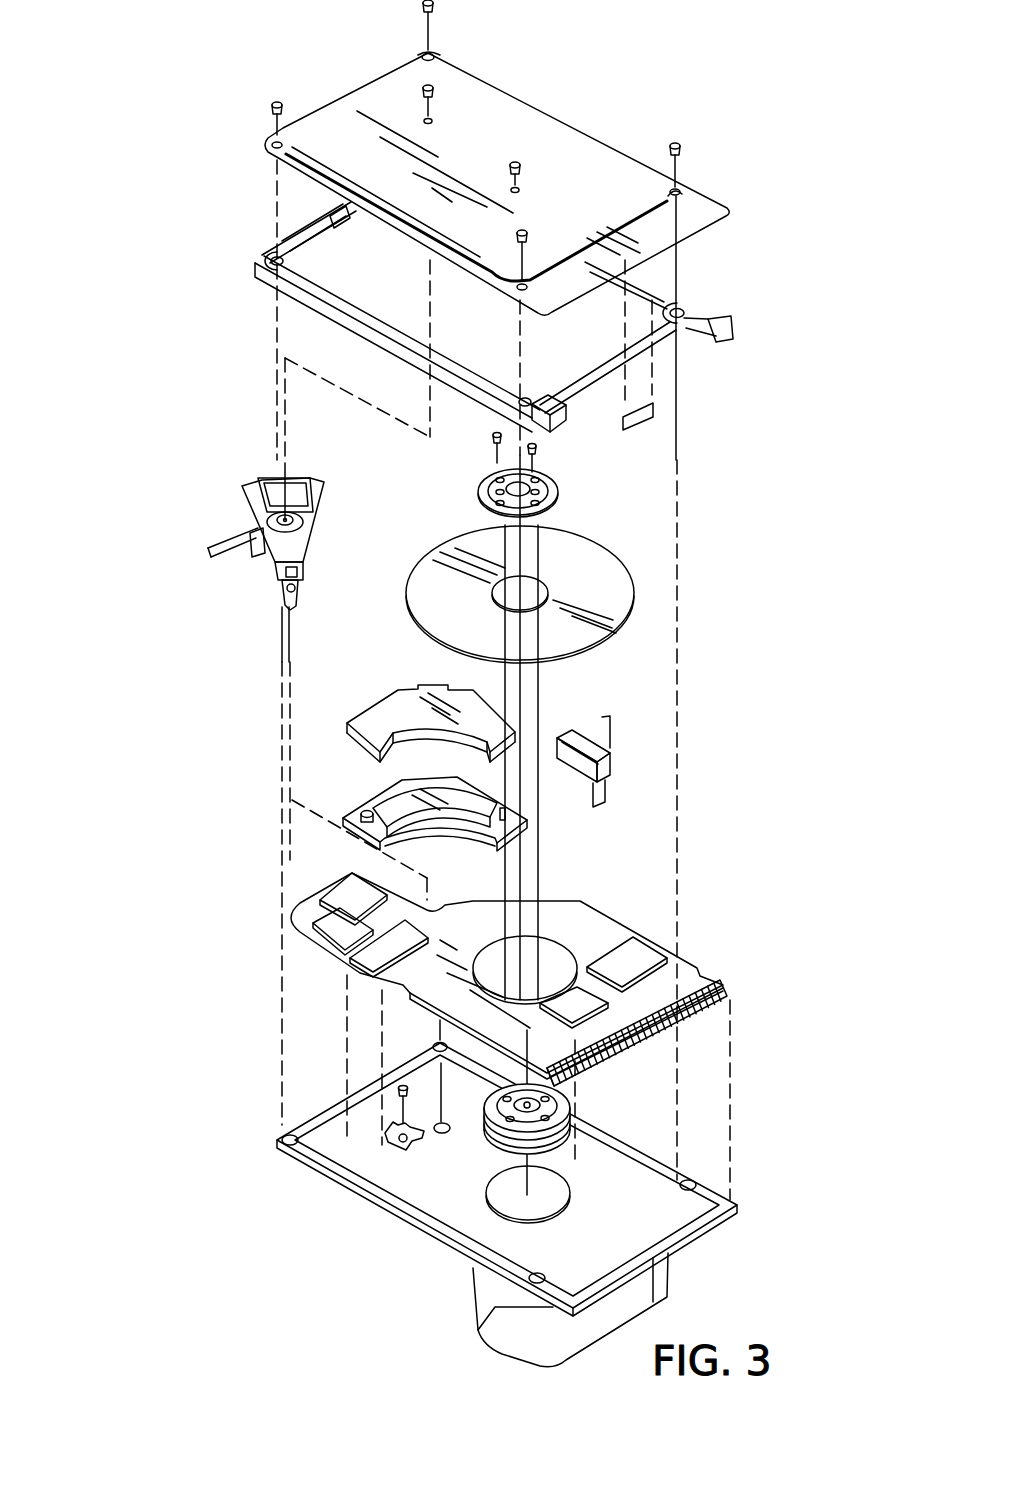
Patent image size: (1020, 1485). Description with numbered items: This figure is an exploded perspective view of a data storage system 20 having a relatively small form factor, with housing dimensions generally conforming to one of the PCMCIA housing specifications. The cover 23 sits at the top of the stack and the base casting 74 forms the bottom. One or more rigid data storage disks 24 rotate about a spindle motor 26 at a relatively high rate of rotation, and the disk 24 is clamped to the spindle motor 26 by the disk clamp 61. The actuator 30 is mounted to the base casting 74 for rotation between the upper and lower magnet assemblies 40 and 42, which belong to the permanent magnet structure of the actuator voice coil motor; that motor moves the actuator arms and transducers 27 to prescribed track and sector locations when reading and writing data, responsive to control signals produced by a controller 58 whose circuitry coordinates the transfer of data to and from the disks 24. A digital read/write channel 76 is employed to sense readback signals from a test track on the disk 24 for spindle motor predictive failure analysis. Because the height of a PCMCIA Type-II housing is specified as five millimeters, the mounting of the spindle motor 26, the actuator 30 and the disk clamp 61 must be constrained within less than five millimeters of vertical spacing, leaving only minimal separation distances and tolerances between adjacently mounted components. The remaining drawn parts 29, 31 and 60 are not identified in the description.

The data storage system 20 is at (165, 460).
The cover 23 is at (370, 164).
The rigid data storage disk 24 is at (613, 588).
The spindle motor 26 is at (571, 1107).
The transducers 27 is at (282, 617).
The frame 29 is at (256, 262).
The actuator 30 is at (270, 560).
The connector 31 is at (612, 763).
The upper magnet assembly 40 is at (380, 715).
The lower magnet assembly 42 is at (455, 800).
The controller 58 is at (327, 930).
The latch bracket 60 is at (397, 1128).
The disk clamp 61 is at (556, 483).
The base casting 74 is at (347, 1155).
The digital read/write channel 76 is at (578, 925).